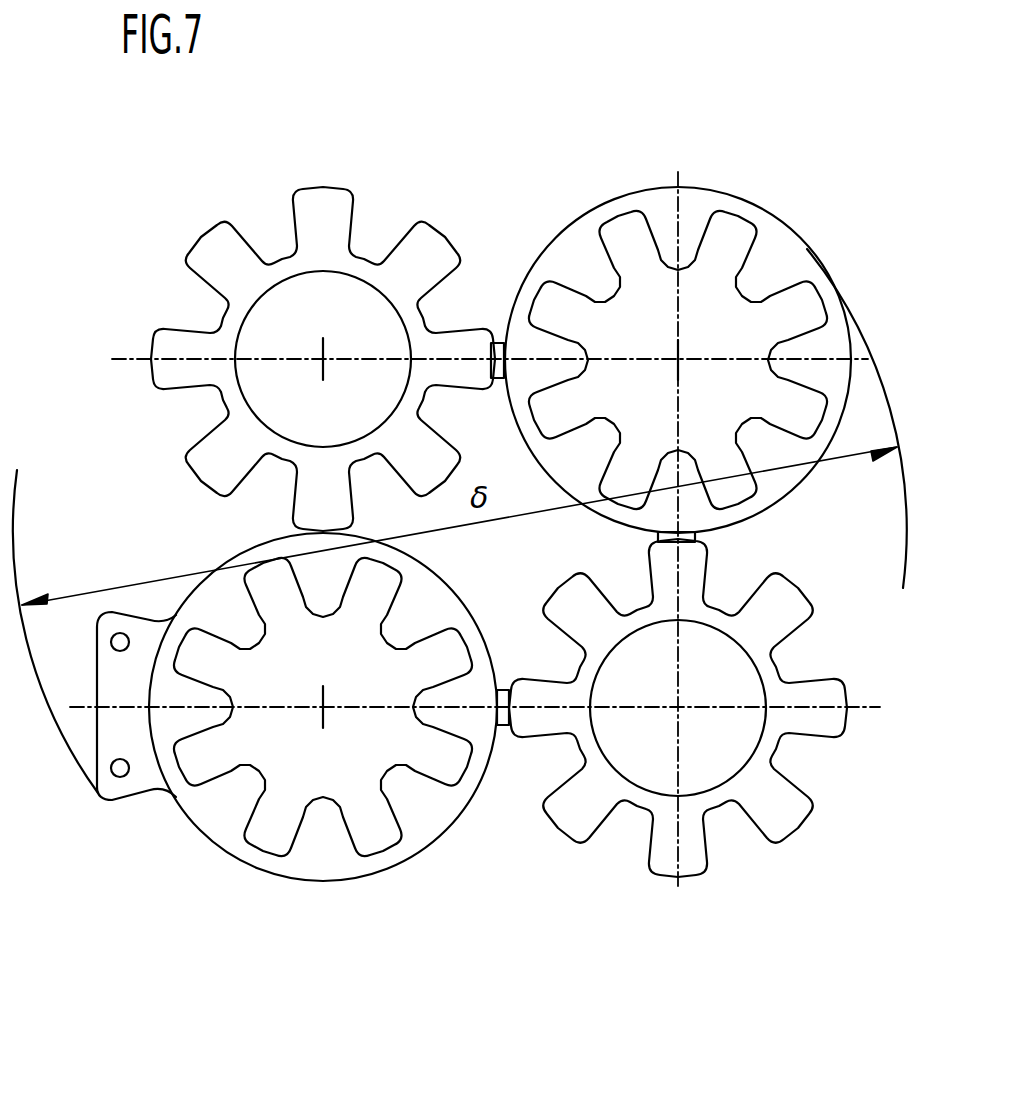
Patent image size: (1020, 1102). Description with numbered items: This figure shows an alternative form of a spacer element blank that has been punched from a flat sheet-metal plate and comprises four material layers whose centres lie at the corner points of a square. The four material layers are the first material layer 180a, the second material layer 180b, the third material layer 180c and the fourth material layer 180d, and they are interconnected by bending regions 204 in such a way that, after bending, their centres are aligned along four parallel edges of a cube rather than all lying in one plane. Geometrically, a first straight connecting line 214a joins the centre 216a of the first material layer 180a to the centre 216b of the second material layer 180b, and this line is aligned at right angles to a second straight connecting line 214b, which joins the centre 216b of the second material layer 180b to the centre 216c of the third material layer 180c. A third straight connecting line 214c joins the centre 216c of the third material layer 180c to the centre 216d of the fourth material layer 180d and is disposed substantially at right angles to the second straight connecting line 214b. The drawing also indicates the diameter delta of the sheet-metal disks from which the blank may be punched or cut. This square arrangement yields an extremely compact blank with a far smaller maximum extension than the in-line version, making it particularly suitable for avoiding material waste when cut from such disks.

The first material layer 180a is at (330, 848).
The second material layer 180b is at (780, 806).
The third material layer 180c is at (578, 260).
The fourth material layer 180d is at (328, 216).
The bending region 204 is at (497, 343).
The first straight connecting line 214a is at (882, 707).
The second straight connecting line 214b is at (680, 170).
The third straight connecting line 214c is at (110, 358).
The centre of the first material layer 216a is at (326, 710).
The centre of the second material layer 216b is at (681, 711).
The centre of the third material layer 216c is at (681, 363).
The centre of the fourth material layer 216d is at (326, 362).